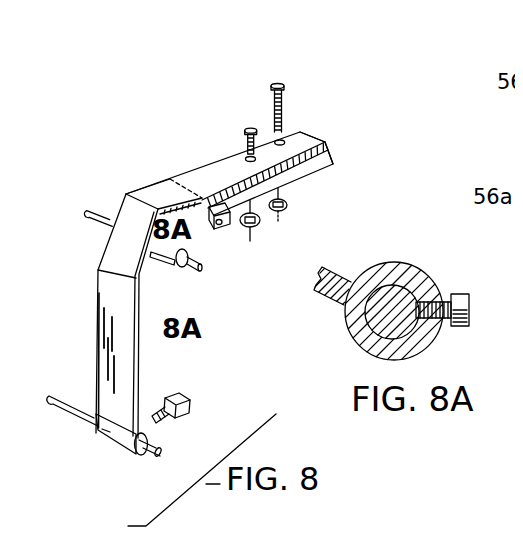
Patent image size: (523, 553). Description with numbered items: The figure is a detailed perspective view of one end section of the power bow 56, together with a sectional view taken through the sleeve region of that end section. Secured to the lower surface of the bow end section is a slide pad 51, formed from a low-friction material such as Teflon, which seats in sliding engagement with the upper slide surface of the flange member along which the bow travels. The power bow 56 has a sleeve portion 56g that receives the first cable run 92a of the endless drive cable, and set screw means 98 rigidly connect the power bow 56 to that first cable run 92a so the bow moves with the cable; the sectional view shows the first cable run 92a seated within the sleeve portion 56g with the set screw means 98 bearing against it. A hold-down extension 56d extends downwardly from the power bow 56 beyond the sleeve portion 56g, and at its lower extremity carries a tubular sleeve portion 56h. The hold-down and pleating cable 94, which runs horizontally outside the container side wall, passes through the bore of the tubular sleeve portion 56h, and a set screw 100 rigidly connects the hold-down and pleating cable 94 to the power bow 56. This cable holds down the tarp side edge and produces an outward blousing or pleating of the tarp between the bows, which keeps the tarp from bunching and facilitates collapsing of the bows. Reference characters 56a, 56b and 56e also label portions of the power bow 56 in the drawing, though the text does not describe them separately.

In FIG. 8, the power bow 56 is at (188, 156).
In FIG. 8, the end face of plate 56a is at (322, 152).
In FIG. 8, the upper flange of bracket 56b is at (125, 187).
In FIG. 8, the hold-down extension 56d is at (120, 356).
In FIG. 8, the screws 56e is at (268, 74).
In FIG. 8, the sleeve portion 56g is at (176, 262).
In FIG. 8A, the sleeve portion 56g is at (356, 320).
In FIG. 8, the tubular sleeve portion 56h is at (112, 437).
In FIG. 8, the slide pad 51 is at (195, 213).
In FIG. 8, the first cable run 92a is at (78, 206).
In FIG. 8A, the first cable run 92a is at (397, 286).
In FIG. 8, the hold-down and pleating cable 94 is at (66, 403).
In FIG. 8, the set screw means 98 is at (217, 206).
In FIG. 8A, the set screw means 98 is at (476, 300).
In FIG. 8, the set screw 100 is at (181, 399).